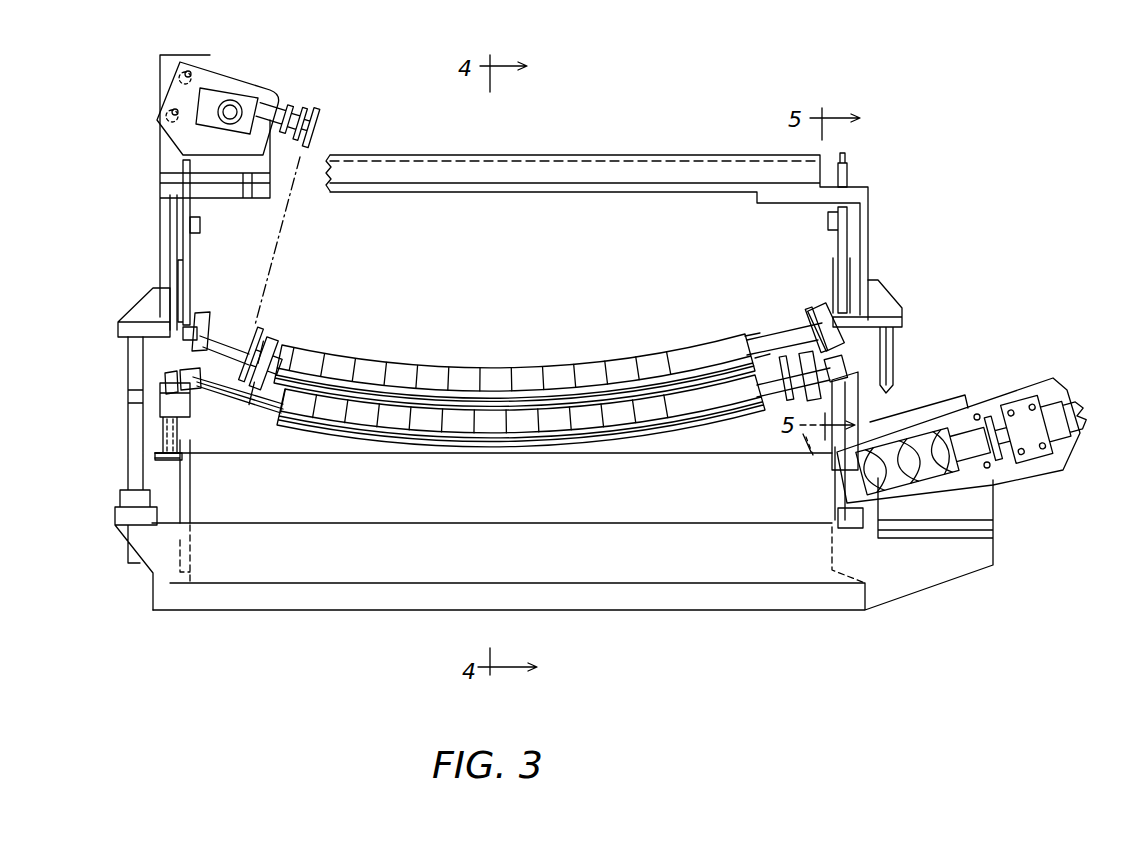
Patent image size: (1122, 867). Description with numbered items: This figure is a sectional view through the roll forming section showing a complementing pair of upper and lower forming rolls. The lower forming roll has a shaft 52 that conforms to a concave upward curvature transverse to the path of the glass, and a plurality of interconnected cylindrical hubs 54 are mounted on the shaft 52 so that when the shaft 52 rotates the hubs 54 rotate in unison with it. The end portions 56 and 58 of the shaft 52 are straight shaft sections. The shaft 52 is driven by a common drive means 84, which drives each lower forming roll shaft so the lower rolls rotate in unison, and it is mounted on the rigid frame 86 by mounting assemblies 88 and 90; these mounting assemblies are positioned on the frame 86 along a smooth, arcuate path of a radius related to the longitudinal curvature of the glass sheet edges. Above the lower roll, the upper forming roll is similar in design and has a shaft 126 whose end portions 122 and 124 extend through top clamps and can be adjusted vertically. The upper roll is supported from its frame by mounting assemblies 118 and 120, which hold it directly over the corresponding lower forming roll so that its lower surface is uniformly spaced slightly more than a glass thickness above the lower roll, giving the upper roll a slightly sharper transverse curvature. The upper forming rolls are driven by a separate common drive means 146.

The shaft 52 is at (248, 403).
The cylindrical hubs 54 is at (420, 438).
The end portion 56 is at (815, 345).
The end portion 58 is at (207, 372).
The common drive means 84 is at (1025, 410).
The rigid frame 86 is at (168, 470).
The mounting assembly 88 is at (857, 380).
The mounting assembly 90 is at (180, 388).
The mounting assembly 118 is at (847, 247).
The mounting assembly 120 is at (185, 248).
The end portion 122 is at (822, 314).
The end portion 124 is at (225, 303).
The shaft 126 is at (246, 330).
The common drive means 146 is at (247, 82).